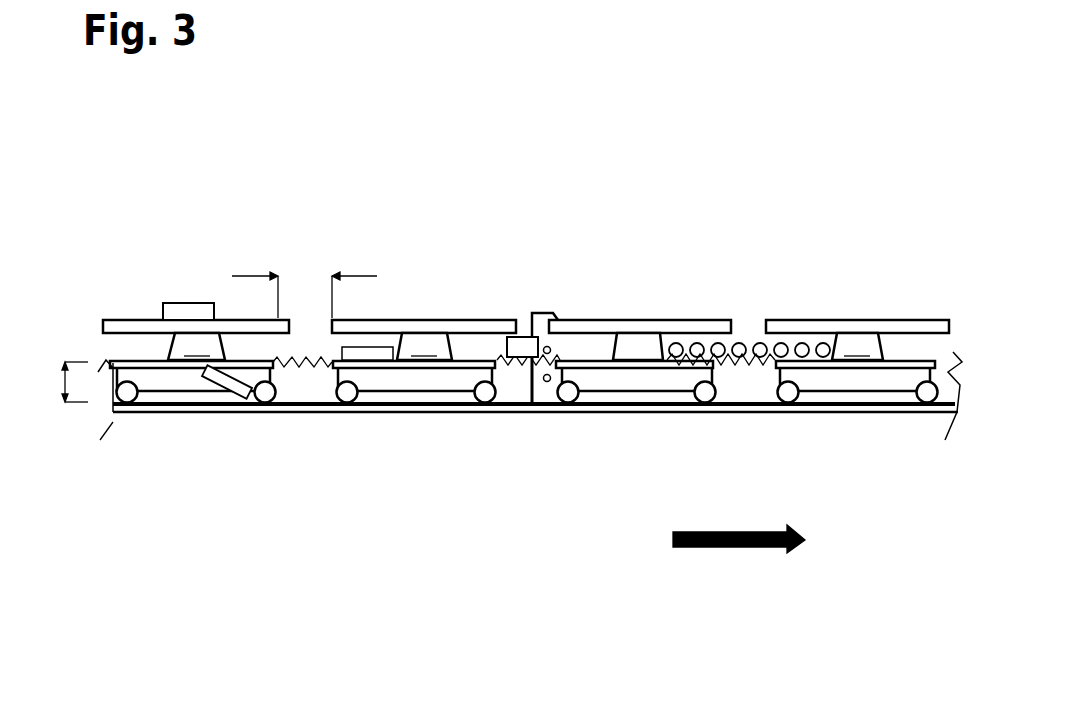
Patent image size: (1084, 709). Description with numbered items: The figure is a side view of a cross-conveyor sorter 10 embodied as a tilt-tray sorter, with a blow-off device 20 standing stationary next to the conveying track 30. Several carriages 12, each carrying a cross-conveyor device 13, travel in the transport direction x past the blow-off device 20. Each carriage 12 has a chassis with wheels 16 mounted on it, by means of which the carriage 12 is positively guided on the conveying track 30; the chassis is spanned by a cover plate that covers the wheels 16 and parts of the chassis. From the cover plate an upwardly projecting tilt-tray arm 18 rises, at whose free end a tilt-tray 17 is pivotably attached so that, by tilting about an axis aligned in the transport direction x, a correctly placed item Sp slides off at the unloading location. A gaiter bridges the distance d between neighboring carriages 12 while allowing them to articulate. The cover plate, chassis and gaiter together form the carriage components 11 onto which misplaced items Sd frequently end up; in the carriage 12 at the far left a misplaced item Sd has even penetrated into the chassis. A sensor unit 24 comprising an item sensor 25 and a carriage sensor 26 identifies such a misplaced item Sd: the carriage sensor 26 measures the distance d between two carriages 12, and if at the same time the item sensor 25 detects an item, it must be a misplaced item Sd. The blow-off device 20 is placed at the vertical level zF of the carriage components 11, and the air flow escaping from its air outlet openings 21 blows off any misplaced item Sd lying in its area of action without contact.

The cross-conveyor sorter 10 is at (317, 183).
The carriage components 11 is at (97, 370).
The carriage 12 is at (190, 387).
The cross-conveyor device 13 is at (138, 320).
The wheels 16 is at (275, 408).
The tilt-tray 17 is at (228, 320).
The tilt-tray arm 18 is at (525, 346).
The blow-off device 20 is at (782, 213).
The air outlet openings 21 is at (753, 332).
The sensor unit 24 is at (565, 320).
The item sensor 25 is at (537, 337).
The carriage sensor 26 is at (547, 382).
The conveying track 30 is at (757, 415).
The correctly placed item Sp is at (176, 303).
The misplaced item Sd is at (345, 320).
The distance d is at (253, 275).
The vertical level zF is at (52, 388).
The transport direction x is at (742, 548).